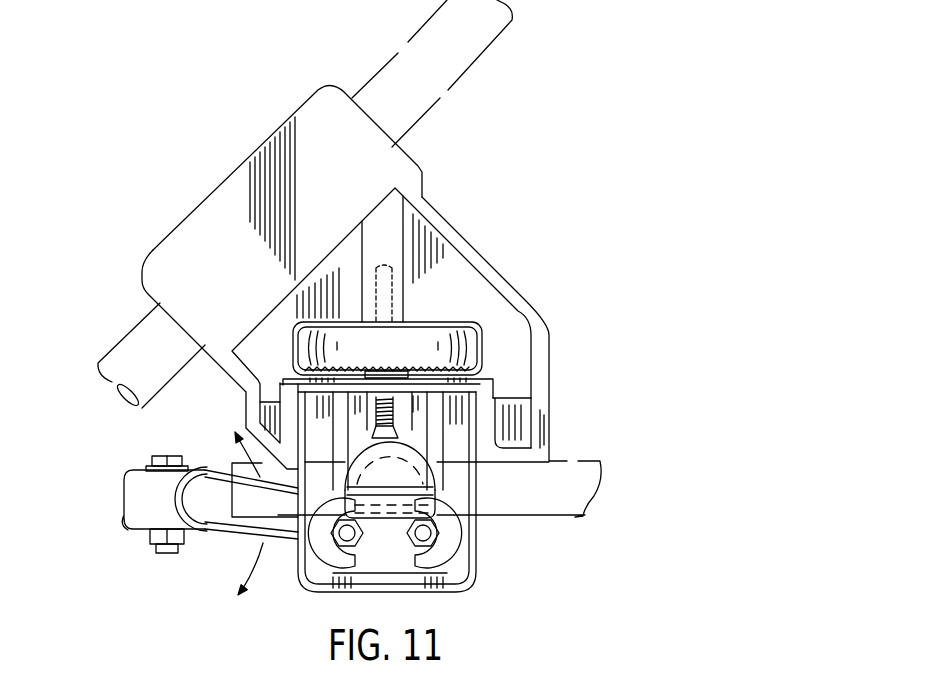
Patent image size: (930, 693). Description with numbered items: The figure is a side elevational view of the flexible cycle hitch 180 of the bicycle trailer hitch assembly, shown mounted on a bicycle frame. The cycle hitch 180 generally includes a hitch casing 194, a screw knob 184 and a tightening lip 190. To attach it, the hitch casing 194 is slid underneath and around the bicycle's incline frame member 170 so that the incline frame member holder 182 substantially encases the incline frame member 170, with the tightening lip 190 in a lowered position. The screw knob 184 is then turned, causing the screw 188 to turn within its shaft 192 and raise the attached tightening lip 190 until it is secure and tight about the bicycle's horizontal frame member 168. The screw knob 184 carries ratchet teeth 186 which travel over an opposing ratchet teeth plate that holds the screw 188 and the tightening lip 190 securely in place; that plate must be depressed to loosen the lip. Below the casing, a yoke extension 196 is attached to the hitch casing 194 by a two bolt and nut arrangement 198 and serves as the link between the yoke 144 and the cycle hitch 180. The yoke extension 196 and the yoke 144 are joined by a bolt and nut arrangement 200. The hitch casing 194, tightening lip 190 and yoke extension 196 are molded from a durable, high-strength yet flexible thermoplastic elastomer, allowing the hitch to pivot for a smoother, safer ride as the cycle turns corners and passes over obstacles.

The yoke 144 is at (137, 492).
The horizontal frame member 168 is at (578, 518).
The incline frame member 170 is at (477, 65).
The flexible cycle hitch 180 is at (185, 130).
The incline frame member holder 182 is at (165, 255).
The screw knob 184 is at (472, 347).
The ratchet teeth 186 is at (468, 380).
The screw 188 is at (400, 290).
The tightening lip 190 is at (445, 492).
The shaft 192 is at (388, 222).
The hitch casing 194 is at (510, 280).
The yoke extension 196 is at (278, 540).
The two bolt and nut arrangement 198 is at (440, 540).
The bolt and nut arrangement 200 is at (167, 552).